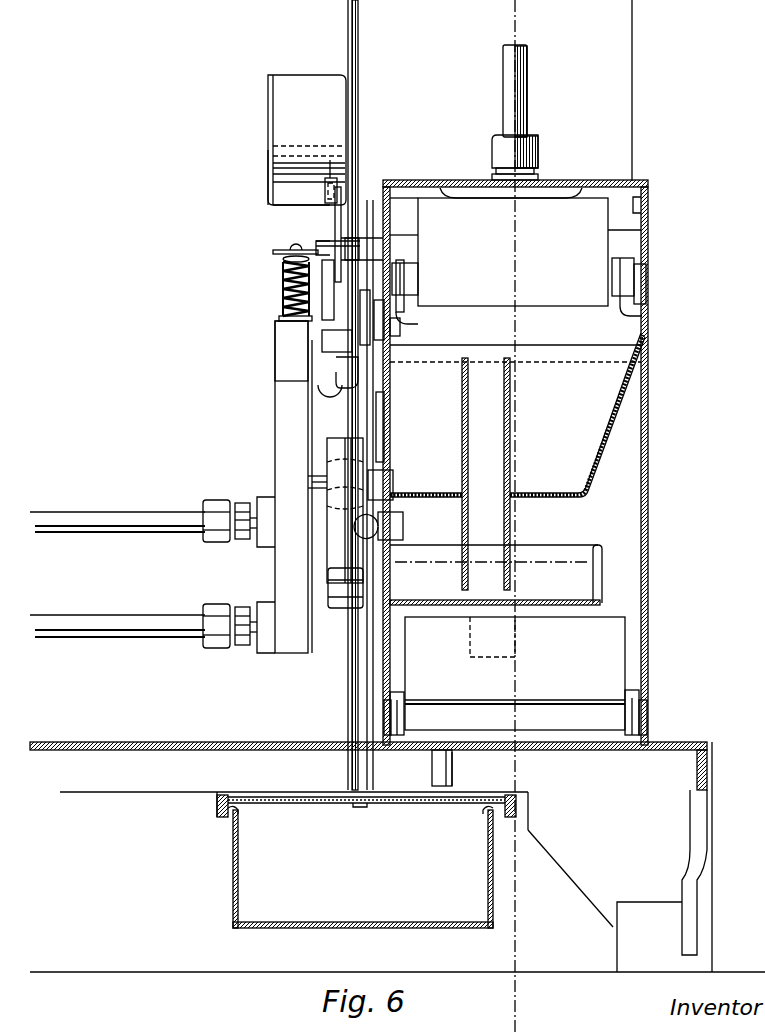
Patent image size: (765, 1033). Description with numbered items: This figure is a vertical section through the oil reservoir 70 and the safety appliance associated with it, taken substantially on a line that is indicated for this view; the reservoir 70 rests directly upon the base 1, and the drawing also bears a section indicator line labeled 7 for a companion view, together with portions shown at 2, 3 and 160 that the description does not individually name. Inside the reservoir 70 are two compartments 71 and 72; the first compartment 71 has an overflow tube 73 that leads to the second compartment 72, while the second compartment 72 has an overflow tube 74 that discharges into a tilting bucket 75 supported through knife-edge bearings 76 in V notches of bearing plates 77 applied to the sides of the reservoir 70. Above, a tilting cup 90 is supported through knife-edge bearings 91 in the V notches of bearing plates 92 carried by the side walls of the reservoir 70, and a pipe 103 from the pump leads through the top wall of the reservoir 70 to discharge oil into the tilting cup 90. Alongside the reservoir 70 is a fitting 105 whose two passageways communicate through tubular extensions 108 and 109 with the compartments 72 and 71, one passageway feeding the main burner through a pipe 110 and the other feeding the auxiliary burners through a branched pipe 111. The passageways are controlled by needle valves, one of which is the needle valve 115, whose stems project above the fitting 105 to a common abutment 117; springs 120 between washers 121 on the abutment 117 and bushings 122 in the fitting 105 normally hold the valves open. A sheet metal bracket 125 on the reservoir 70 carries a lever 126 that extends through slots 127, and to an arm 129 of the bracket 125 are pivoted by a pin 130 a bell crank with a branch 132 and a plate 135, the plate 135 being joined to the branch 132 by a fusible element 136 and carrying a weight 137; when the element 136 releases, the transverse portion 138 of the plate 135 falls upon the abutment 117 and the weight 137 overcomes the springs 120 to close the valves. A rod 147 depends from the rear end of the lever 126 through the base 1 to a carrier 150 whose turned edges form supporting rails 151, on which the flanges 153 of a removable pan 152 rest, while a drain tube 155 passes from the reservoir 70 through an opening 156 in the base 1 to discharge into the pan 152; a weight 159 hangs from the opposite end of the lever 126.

The base 1 is at (216, 742).
The wall bracket 2 is at (620, 857).
The wall 3 is at (641, 118).
The section line 7 is at (534, 32).
The oil reservoir 70 is at (648, 505).
The compartment 71 is at (588, 452).
The compartment 72 is at (596, 545).
The overflow tube 73 is at (510, 403).
The overflow tube 74 is at (516, 582).
The tilting bucket 75 is at (515, 673).
The knife-edge bearings 76 is at (399, 715).
The bearing plates 77 is at (395, 700).
The tilting cup 90 is at (513, 252).
The knife-edge bearings 91 is at (408, 275).
The bearing plates 92 is at (404, 316).
The pipe 103 is at (520, 85).
The fitting 105 is at (275, 438).
The tubular extension 108 is at (322, 608).
The tubular extension 109 is at (310, 480).
The pipe 110 is at (169, 616).
The branched pipe 111 is at (166, 512).
The needle valve 115 is at (290, 328).
The abutment 117 is at (273, 252).
The springs 120 is at (283, 298).
The washers 121 is at (283, 260).
The bushings 122 is at (279, 318).
The bracket 125 is at (401, 292).
The lever 126 is at (336, 365).
The slots 127 is at (400, 332).
The arm 129 is at (352, 243).
The pin 130 is at (316, 248).
The branch 132 is at (335, 215).
The plate 135 is at (268, 190).
The fusible element 136 is at (325, 186).
The weight 137 is at (306, 80).
The transverse portion 138 is at (287, 210).
The rod 147 is at (365, 668).
The carrier 150 is at (300, 796).
The supporting rails 151 is at (222, 820).
The pan 152 is at (363, 869).
The flanges 153 is at (238, 812).
The drain tube 155 is at (455, 765).
The opening 156 is at (432, 755).
The weight 159 is at (341, 440).
The rail 160 is at (358, 42).